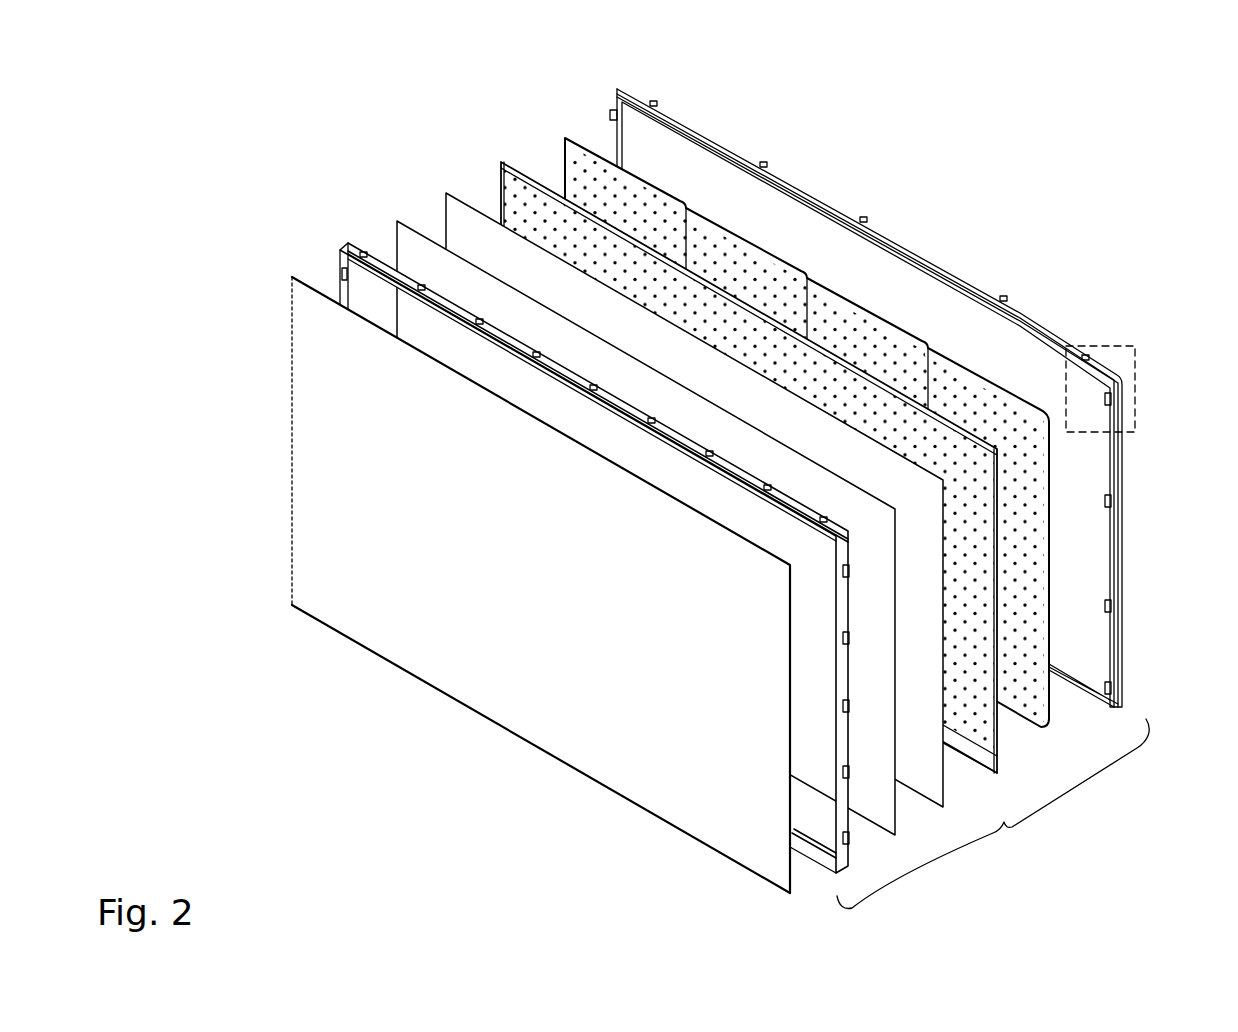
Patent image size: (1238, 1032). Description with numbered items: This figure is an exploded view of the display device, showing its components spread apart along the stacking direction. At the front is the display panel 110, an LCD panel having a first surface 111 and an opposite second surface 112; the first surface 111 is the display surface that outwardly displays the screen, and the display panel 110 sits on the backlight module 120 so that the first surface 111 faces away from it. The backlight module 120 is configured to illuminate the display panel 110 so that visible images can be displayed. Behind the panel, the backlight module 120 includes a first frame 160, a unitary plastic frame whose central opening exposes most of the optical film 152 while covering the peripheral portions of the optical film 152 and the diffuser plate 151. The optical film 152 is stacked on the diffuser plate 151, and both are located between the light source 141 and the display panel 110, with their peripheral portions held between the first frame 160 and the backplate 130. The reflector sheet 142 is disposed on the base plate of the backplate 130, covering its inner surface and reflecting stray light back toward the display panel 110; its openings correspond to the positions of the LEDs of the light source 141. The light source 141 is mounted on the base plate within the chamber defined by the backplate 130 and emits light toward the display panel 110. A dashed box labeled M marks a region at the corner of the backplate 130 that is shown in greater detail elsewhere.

The display panel 110 is at (490, 549).
The first surface 111 is at (283, 318).
The second surface 112 is at (308, 263).
The backlight module 120 is at (993, 814).
The backplate 130 is at (607, 80).
The light source 141 is at (556, 126).
The reflector sheet 142 is at (489, 151).
The diffuser plate 151 is at (435, 180).
The optical film 152 is at (386, 208).
The first frame 160 is at (328, 232).
The enlarged region M is at (1137, 378).